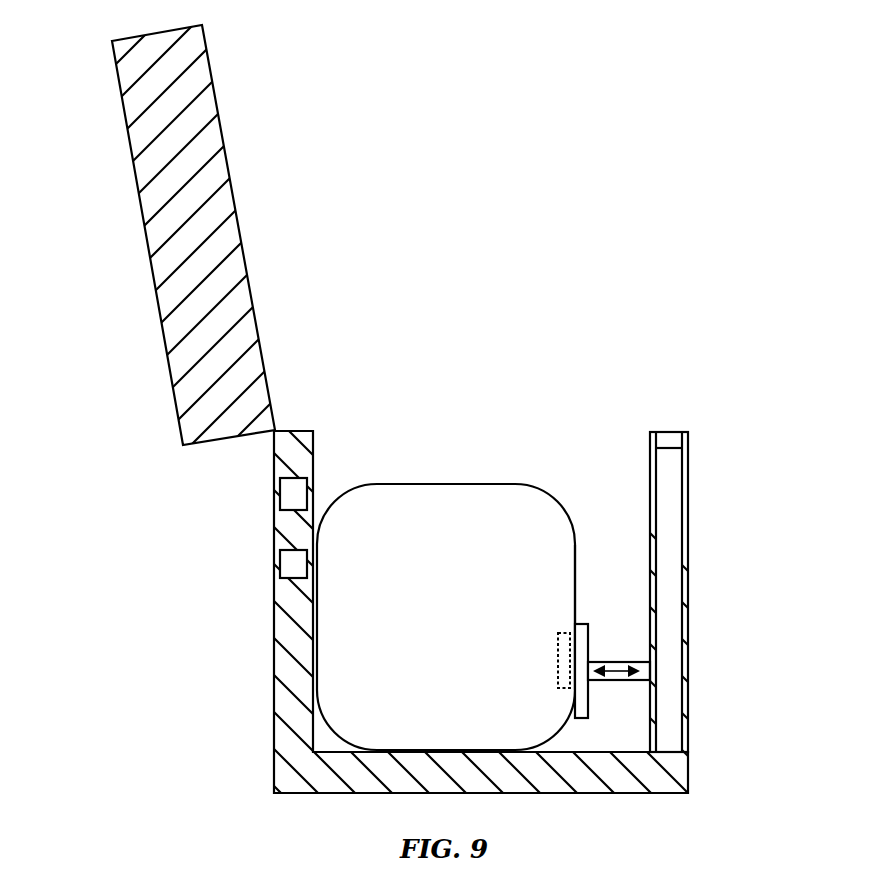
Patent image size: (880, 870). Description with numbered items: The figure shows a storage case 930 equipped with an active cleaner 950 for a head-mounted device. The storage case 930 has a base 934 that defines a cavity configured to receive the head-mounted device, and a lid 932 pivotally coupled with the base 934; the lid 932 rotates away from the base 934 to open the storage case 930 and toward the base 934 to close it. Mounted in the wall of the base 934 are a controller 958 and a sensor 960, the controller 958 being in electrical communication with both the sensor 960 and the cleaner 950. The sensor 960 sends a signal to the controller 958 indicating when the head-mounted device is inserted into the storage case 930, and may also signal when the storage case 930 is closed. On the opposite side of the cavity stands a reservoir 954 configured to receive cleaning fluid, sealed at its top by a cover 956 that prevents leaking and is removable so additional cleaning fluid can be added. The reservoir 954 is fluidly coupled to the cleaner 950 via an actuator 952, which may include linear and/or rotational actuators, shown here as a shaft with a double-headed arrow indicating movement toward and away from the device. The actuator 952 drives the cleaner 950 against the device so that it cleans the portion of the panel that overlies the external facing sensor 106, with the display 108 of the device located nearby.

The storage case 930 is at (96, 294).
The lid 932 is at (235, 185).
The base 934 is at (275, 735).
The cleaner 950 is at (583, 718).
The actuator 952 is at (627, 683).
The reservoir 954 is at (670, 623).
The cover 956 is at (668, 432).
The controller 958 is at (278, 500).
The sensor 960 is at (278, 570).
The external facing sensor 106 is at (558, 662).
The display 108 is at (575, 652).